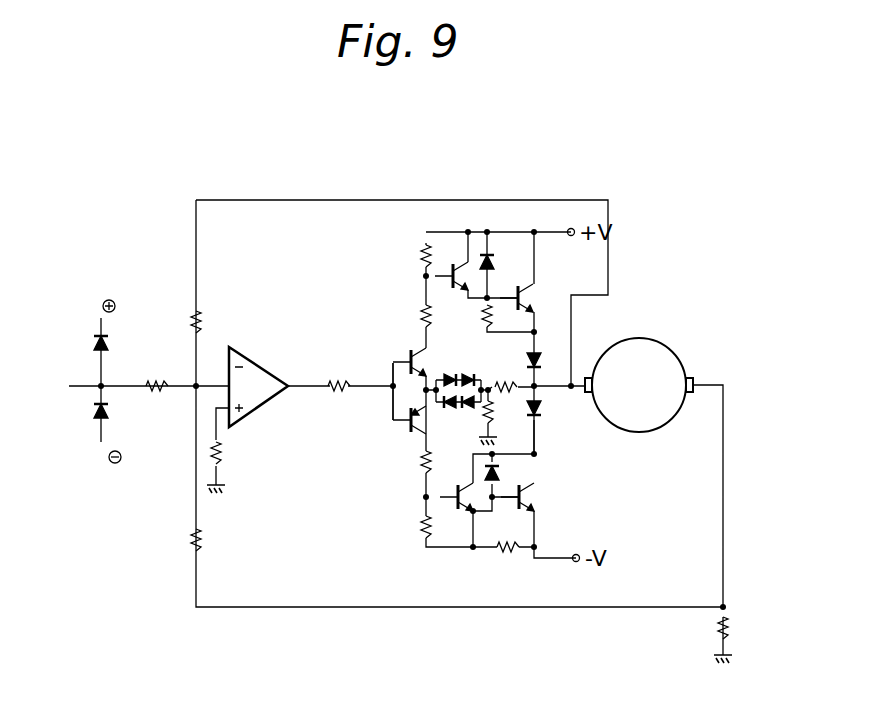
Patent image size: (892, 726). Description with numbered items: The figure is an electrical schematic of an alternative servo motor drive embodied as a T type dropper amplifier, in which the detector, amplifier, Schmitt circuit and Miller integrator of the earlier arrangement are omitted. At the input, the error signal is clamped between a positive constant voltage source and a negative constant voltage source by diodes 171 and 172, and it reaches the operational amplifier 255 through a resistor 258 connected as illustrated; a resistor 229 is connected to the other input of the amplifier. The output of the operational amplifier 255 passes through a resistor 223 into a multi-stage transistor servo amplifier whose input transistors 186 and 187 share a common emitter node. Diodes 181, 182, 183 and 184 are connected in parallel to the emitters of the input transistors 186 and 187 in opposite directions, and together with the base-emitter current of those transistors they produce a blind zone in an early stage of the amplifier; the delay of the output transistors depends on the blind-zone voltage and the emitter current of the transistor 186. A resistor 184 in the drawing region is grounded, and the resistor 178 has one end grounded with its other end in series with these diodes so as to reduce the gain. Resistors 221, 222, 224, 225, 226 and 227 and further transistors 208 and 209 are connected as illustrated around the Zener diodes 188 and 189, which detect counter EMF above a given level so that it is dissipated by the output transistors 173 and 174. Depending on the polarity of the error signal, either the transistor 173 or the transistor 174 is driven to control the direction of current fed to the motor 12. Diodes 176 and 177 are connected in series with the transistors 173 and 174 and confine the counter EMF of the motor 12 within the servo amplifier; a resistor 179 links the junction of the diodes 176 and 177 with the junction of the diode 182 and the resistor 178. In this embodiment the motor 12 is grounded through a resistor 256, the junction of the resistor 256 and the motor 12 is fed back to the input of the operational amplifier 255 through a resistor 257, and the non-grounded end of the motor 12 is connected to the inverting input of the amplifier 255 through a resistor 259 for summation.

The motor 12 is at (670, 350).
The diode 171 is at (92, 342).
The diode 172 is at (92, 412).
The transistor 173 is at (524, 294).
The transistor 174 is at (532, 496).
The diode 176 is at (544, 360).
The diode 177 is at (547, 410).
The resistor 178 is at (535, 436).
The resistor 179 is at (505, 385).
The diode 181 is at (421, 378).
The diode 182 is at (456, 378).
The diode 183 is at (424, 434).
The diode 184 is at (476, 412).
The input transistor 186 is at (416, 350).
The input transistor 187 is at (406, 428).
The Zener diode 188 is at (496, 260).
The Zener diode 189 is at (500, 468).
The upper bias transistor 208 is at (440, 266).
The lower bias transistor 209 is at (452, 508).
The resistor 221 is at (418, 260).
The resistor 222 is at (416, 312).
The resistor 223 is at (339, 381).
The resistor 224 is at (420, 466).
The resistor 225 is at (418, 528).
The resistor 226 is at (480, 320).
The resistor 227 is at (510, 553).
The resistor 229 is at (226, 454).
The operational amplifier 255 is at (260, 362).
The resistor 256 is at (730, 630).
The resistor 257 is at (218, 540).
The resistor 258 is at (154, 378).
The resistor 259 is at (205, 320).